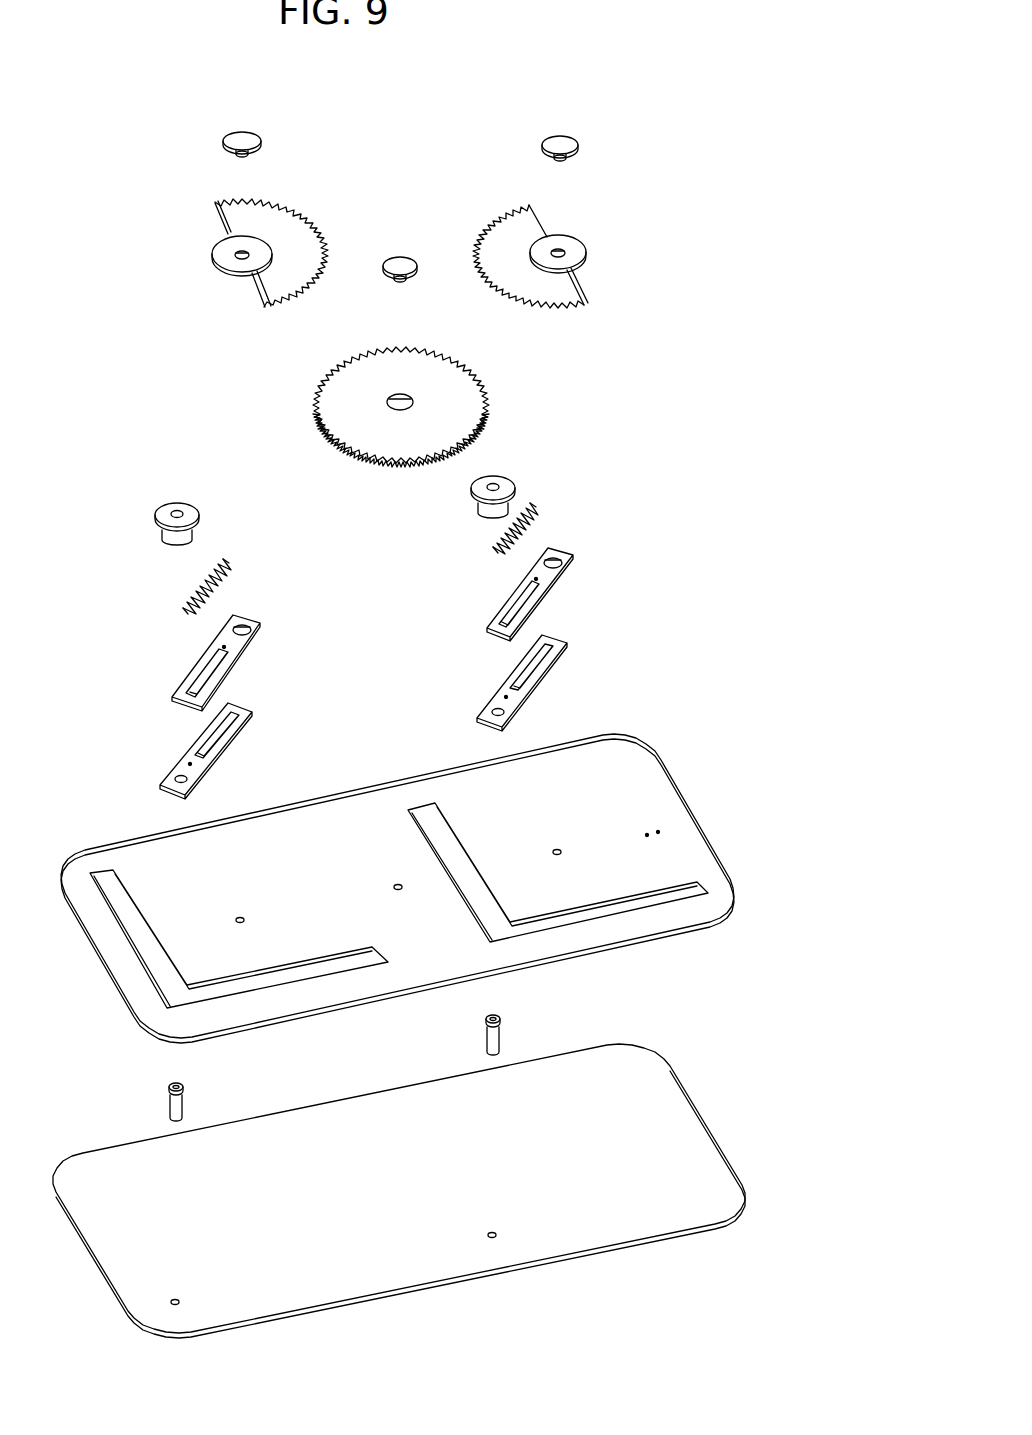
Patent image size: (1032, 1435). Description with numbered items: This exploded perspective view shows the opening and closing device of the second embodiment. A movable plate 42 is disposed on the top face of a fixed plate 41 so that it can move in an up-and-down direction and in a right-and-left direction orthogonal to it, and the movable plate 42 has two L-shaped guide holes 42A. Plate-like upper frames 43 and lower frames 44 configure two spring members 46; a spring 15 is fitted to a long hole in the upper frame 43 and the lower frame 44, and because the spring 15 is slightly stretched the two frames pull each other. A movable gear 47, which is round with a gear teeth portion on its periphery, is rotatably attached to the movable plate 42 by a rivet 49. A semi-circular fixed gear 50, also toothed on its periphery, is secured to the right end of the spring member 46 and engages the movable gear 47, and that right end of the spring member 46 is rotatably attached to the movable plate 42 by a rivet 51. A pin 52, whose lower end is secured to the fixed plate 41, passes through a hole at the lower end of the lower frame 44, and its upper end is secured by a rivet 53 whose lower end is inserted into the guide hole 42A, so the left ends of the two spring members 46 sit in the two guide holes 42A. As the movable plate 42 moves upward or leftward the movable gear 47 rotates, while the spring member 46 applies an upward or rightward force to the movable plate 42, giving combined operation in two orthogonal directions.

The spring 15 is at (538, 513).
The fixed plate 41 is at (620, 1227).
The movable plate 42 is at (399, 880).
The guide hole 42A is at (415, 822).
The upper frame 43 is at (543, 595).
The lower frame 44 is at (561, 677).
The spring member 46 is at (594, 612).
The movable gear 47 is at (314, 403).
The rivet 49 is at (401, 257).
The fixed gear 50 is at (588, 252).
The rivet 51 is at (578, 141).
The pin 52 is at (502, 1035).
The rivet 53 is at (516, 483).